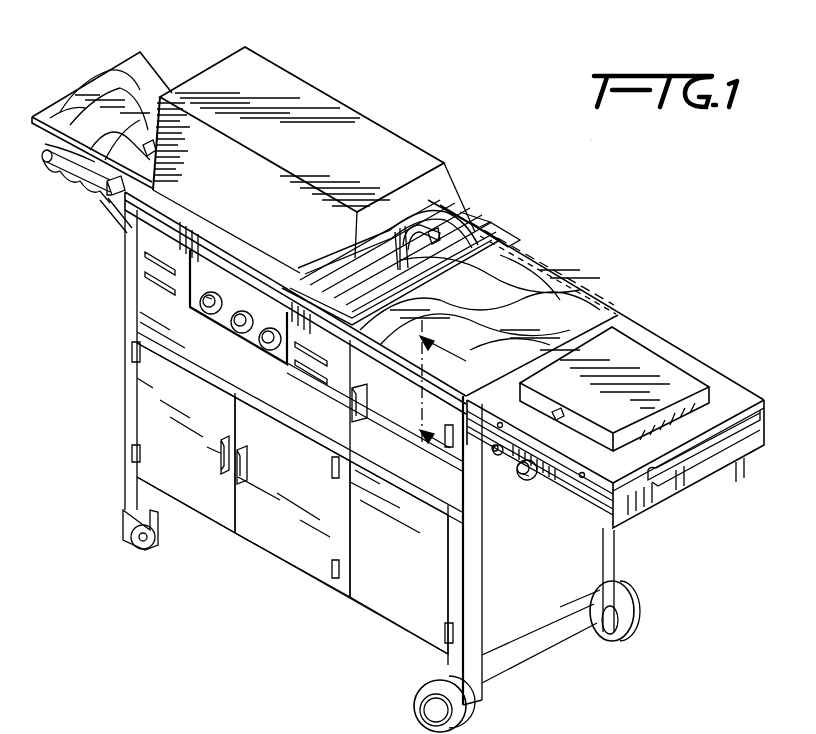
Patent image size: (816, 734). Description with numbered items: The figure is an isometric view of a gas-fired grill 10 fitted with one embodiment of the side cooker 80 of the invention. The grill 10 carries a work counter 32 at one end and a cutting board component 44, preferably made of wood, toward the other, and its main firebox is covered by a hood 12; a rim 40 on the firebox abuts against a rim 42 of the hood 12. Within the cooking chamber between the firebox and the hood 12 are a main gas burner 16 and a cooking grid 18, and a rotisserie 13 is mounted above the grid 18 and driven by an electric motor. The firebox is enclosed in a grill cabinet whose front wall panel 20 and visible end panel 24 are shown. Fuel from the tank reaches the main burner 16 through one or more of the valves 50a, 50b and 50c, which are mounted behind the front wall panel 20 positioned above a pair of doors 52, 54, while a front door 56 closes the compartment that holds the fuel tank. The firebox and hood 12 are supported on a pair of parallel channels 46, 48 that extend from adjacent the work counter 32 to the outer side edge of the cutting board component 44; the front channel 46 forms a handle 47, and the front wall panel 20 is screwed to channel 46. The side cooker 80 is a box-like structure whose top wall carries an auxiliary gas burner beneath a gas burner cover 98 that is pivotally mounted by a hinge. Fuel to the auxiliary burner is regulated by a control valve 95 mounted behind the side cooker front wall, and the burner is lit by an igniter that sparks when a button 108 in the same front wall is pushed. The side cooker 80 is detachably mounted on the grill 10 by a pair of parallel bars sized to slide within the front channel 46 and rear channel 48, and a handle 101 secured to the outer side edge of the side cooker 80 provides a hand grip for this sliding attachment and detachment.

The grill 10 is at (370, 93).
The hood 12 is at (404, 160).
The rotisserie 13 is at (398, 226).
The main gas burner 16 is at (337, 252).
The cooking grid 18 is at (452, 232).
The front wall panel 20 is at (148, 292).
The end panel 24 is at (588, 579).
The work counter 32 is at (153, 62).
The rim 40 is at (450, 256).
The rim 42 is at (490, 232).
The cutting board component 44 is at (572, 318).
The front channel 46 is at (118, 223).
The handle 47 is at (72, 183).
The rear channel 48 is at (540, 254).
The valve 50a is at (205, 312).
The valve 50b is at (241, 332).
The valve 50c is at (268, 348).
The door 52 is at (188, 490).
The door 54 is at (280, 545).
The front door 56 is at (388, 602).
The side cooker 80 is at (689, 338).
The control valve 95 is at (534, 480).
The gas burner cover 98 is at (642, 356).
The handle 101 is at (703, 485).
The button 108 is at (500, 458).